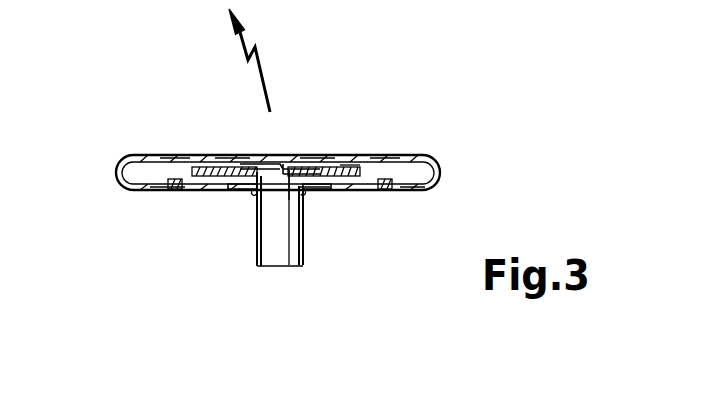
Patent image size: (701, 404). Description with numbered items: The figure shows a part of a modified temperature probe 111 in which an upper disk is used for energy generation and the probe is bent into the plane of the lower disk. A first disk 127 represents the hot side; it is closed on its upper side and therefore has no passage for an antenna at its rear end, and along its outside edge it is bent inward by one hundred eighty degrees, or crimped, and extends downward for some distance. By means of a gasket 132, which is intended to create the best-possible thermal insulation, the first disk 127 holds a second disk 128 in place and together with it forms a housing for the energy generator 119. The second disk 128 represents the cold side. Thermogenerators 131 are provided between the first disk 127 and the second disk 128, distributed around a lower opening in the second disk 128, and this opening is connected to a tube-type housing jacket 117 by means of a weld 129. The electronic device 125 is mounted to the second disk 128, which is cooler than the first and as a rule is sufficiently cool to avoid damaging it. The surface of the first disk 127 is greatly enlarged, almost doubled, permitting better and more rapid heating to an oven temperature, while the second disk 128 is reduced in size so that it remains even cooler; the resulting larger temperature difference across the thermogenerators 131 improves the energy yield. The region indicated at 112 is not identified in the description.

The temperature probe 111 is at (498, 123).
The shaft 112 is at (313, 252).
The tube-type housing jacket 117 is at (255, 233).
The energy generator 119 is at (128, 135).
The electronic device 125 is at (335, 167).
The first disk 127 is at (350, 165).
The second disk 128 is at (210, 193).
The weld 129 is at (305, 195).
The thermogenerators 131 is at (237, 163).
The gasket 132 is at (386, 191).